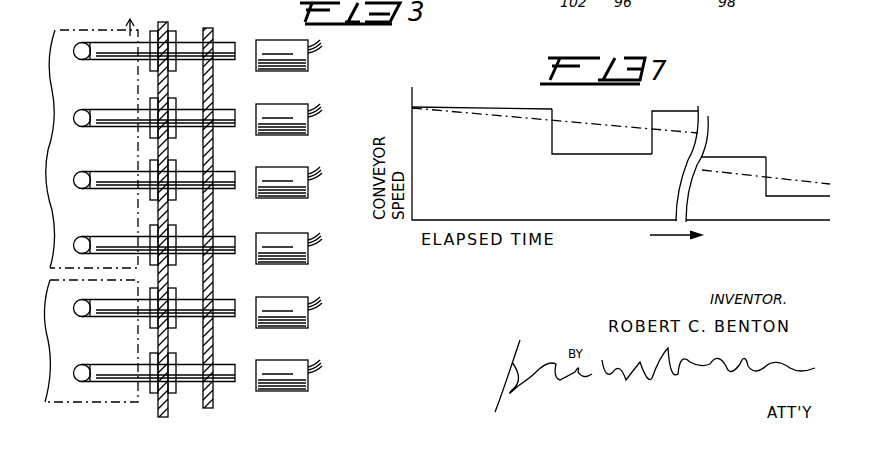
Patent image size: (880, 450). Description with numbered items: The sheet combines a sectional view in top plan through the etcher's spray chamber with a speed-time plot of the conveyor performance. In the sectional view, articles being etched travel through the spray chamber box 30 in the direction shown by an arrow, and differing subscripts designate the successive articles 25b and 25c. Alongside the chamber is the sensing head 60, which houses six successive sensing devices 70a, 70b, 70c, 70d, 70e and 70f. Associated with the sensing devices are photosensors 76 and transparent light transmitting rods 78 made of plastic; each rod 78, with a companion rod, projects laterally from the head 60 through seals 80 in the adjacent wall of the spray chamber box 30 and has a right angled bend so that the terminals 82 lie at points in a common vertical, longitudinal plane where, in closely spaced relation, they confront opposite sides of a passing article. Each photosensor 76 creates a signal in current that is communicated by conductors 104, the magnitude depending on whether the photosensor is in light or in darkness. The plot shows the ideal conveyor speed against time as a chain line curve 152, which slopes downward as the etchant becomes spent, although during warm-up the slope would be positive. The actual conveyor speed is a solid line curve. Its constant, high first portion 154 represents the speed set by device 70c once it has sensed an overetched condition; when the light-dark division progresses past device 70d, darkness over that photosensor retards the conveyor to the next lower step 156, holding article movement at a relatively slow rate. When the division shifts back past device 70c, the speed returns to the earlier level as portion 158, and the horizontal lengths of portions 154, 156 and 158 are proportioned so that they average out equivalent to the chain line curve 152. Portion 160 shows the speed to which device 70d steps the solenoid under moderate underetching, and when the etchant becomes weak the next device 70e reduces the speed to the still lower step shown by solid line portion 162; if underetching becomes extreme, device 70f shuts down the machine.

In FIG. 3, the spray chamber box 30 is at (165, 24).
In FIG. 3, the sensing head 60 is at (206, 30).
In FIG. 3, the transparent light transmitting rod 78 is at (222, 58).
In FIG. 3, the seals 80 is at (175, 66).
In FIG. 3, the terminals 82 is at (84, 30).
In FIG. 3, the article 25c is at (62, 97).
In FIG. 3, the article 25b is at (58, 300).
In FIG. 3, the photosensor 76 is at (282, 47).
In FIG. 3, the conductors 104 is at (299, 50).
In FIG. 3, the sensing device 70a is at (316, 392).
In FIG. 3, the sensing device 70b is at (316, 329).
In FIG. 3, the sensing device 70c is at (316, 265).
In FIG. 3, the sensing device 70d is at (316, 201).
In FIG. 3, the sensing device 70e is at (316, 135).
In FIG. 3, the sensing device 70f is at (301, 47).
In FIG. 7, the chain line curve 152 is at (496, 112).
In FIG. 7, the constant speed high first portion 154 is at (486, 101).
In FIG. 7, the slower speed portion 156 is at (630, 155).
In FIG. 7, the portion of solid line curve 158 is at (672, 110).
In FIG. 7, the portion of curve 160 is at (740, 157).
In FIG. 7, the solid line portion 162 is at (780, 197).